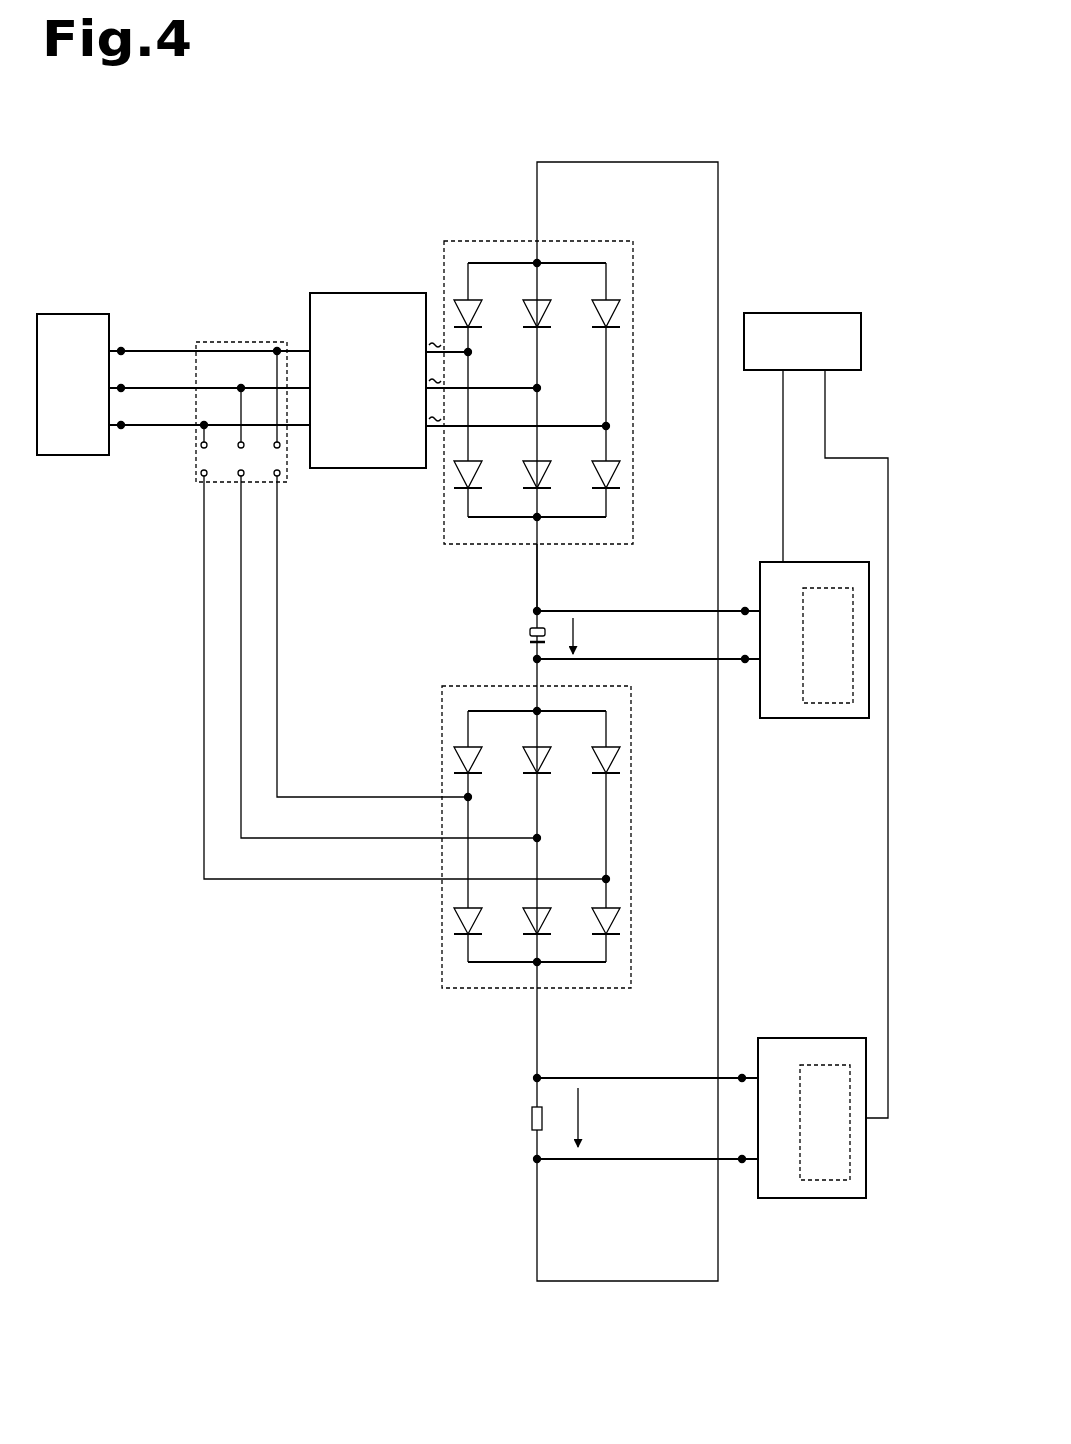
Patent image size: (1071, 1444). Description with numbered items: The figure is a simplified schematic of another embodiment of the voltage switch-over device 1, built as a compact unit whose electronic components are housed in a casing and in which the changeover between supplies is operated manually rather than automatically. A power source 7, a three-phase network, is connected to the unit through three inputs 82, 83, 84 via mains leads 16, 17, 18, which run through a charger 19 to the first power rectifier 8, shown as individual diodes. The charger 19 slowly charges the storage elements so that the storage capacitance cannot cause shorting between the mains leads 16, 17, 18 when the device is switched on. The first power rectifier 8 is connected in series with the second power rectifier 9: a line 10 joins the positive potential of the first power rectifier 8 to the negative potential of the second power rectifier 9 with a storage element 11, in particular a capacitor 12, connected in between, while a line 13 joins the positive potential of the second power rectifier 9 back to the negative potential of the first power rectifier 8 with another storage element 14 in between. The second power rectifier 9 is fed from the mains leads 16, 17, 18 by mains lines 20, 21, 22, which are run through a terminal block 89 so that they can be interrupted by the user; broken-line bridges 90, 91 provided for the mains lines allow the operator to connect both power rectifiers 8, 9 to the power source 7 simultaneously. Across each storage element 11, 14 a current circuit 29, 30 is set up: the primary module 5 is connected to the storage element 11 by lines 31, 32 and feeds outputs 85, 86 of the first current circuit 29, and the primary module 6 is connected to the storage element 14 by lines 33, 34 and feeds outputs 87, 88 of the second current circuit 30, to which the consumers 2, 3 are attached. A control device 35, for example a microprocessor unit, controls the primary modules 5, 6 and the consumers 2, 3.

The voltage switch-over device 1 is at (463, 150).
The consumer 2 is at (830, 530).
The consumer 3 is at (790, 1207).
The primary module 5 is at (827, 600).
The primary module 6 is at (825, 1085).
The power source 7 is at (55, 468).
The first power rectifier 8 is at (575, 250).
The second power rectifier 9 is at (453, 955).
The line 10 is at (535, 585).
The storage element 11 is at (558, 612).
The capacitor 12 is at (528, 631).
The line 13 is at (722, 797).
The storage element 14 is at (530, 1120).
The mains lead 16 is at (172, 352).
The mains lead 17 is at (177, 388).
The mains lead 18 is at (190, 425).
The charger 19 is at (370, 365).
The mains line 20 is at (203, 612).
The mains line 21 is at (239, 658).
The mains line 22 is at (275, 735).
The first current circuit 29 is at (577, 640).
The second current circuit 30 is at (580, 1105).
The line 31 is at (705, 605).
The line 32 is at (727, 665).
The line 33 is at (665, 1075).
The line 34 is at (660, 1162).
The control device 35 is at (805, 312).
The input 82 is at (113, 332).
The input 83 is at (116, 362).
The input 84 is at (118, 440).
The output 85 is at (752, 600).
The output 86 is at (757, 672).
The output 87 is at (748, 1065).
The output 88 is at (745, 1168).
The terminal block 89 is at (245, 332).
The bridge 90 is at (232, 462).
The bridge 91 is at (268, 465).